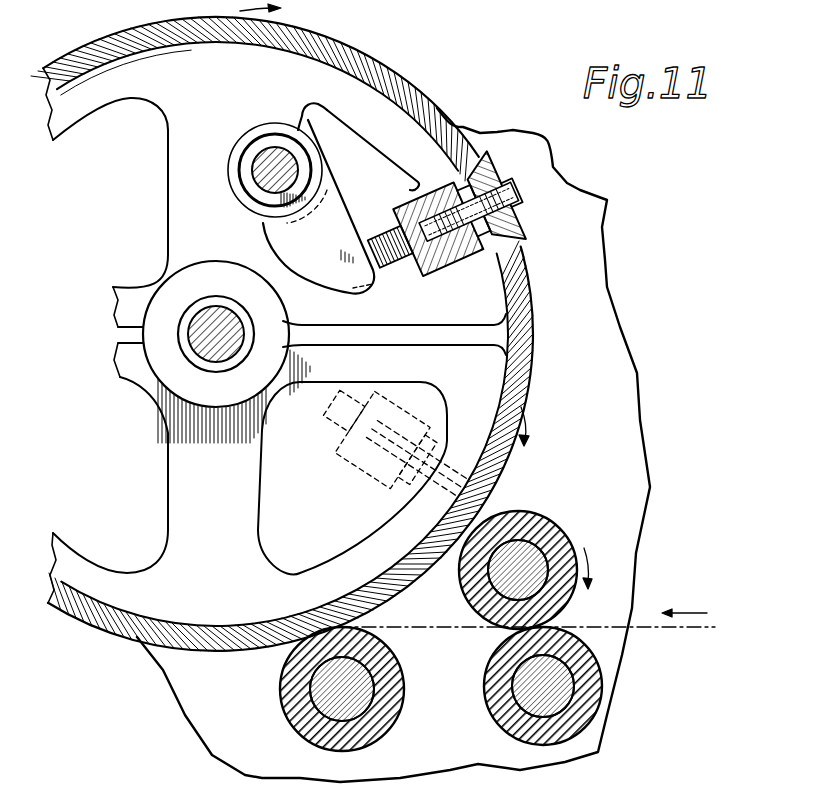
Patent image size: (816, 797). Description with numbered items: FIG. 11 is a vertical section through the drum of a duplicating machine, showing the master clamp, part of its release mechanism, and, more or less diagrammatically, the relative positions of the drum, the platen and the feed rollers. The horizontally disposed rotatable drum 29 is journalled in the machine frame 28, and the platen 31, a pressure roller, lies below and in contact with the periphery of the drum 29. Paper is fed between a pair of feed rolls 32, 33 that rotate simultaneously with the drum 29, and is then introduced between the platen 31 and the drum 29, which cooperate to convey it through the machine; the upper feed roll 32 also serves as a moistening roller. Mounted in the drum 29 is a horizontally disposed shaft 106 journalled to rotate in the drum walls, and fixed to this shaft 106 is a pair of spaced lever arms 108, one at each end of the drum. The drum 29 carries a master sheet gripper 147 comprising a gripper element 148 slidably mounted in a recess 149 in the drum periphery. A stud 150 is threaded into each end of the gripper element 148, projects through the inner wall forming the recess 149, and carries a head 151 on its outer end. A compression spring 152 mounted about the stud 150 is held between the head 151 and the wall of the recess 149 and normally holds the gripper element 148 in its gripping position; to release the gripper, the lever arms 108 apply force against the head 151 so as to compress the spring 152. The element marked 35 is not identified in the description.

The machine frame 28 is at (617, 381).
The drum 29 is at (520, 322).
The platen 31 is at (388, 710).
The upper feed roll 32 is at (565, 530).
The feed roll 33 is at (604, 674).
The hub shaft 35 is at (197, 355).
The shaft 106 is at (262, 157).
The lever arms 108 is at (300, 222).
The master sheet gripper 147 is at (507, 178).
The gripper element 148 is at (522, 217).
The recess 149 is at (417, 182).
The stud 150 is at (508, 246).
The head 151 is at (376, 232).
The compression spring 152 is at (410, 268).